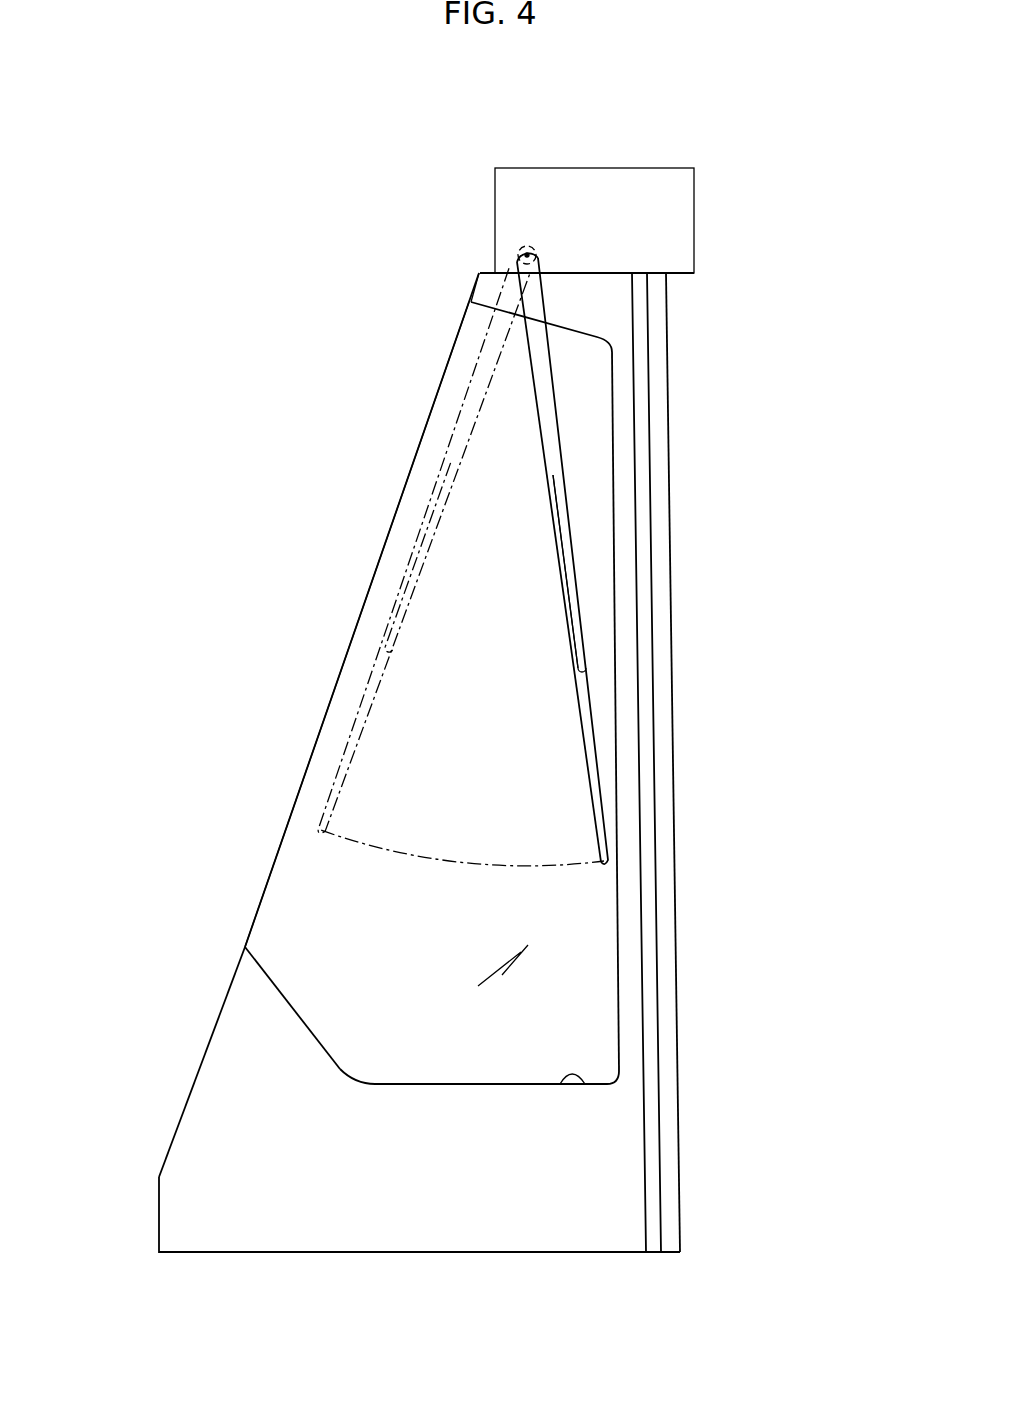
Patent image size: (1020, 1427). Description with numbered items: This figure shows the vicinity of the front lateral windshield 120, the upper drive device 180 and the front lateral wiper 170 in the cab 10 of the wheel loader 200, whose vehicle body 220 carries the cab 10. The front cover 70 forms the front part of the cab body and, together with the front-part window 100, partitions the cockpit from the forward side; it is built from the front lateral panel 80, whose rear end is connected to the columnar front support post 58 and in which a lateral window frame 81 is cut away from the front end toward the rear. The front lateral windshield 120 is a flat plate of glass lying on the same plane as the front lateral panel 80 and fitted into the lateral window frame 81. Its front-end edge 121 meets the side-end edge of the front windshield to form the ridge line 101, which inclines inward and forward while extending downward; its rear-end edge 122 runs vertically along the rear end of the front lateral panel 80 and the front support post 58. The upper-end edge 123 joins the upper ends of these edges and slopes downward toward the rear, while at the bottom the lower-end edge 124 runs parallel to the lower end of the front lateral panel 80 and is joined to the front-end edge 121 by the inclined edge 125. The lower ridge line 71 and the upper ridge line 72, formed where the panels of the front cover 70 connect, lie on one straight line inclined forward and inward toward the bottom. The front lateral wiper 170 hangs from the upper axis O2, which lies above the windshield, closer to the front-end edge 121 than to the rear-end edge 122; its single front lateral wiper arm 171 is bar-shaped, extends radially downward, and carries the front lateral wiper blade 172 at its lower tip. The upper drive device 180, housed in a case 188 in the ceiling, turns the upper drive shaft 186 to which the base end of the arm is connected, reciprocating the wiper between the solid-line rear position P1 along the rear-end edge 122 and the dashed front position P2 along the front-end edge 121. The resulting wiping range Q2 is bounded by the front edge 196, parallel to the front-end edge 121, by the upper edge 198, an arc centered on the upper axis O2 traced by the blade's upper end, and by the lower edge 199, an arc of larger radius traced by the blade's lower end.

The wheel loader 200 is at (337, 157).
The cab 10 is at (407, 163).
The vehicle body 220 is at (292, 217).
The upper drive device 180 is at (642, 178).
The case 188 is at (687, 180).
The upper drive shaft 186 is at (522, 250).
The upper axis O2 is at (528, 250).
The upper ridge line 72 is at (480, 292).
The front-part window 100 is at (317, 610).
The ridge line 101 is at (438, 400).
The front cover 70 is at (379, 1099).
The lower ridge line 71 is at (186, 1103).
The front lateral windshield 120 is at (431, 813).
The front-end edge 121 is at (358, 618).
The rear-end edge 122 is at (616, 536).
The upper-end edge 123 is at (597, 334).
The lower-end edge 124 is at (518, 1084).
The inclined edge 125 is at (300, 1030).
The front lateral panel 80 is at (677, 762).
The front support post 58 is at (652, 962).
The lateral window frame 81 is at (560, 1084).
The front lateral wiper 170 is at (631, 558).
The front lateral wiper arm 171 is at (556, 383).
The front lateral wiper blade 172 is at (588, 683).
The rear position P1 is at (592, 610).
The upper edge 198 is at (405, 550).
The front edge 196 is at (370, 682).
The front position P2 is at (403, 581).
The wiping range Q2 is at (453, 537).
The lower edge 199 is at (376, 847).